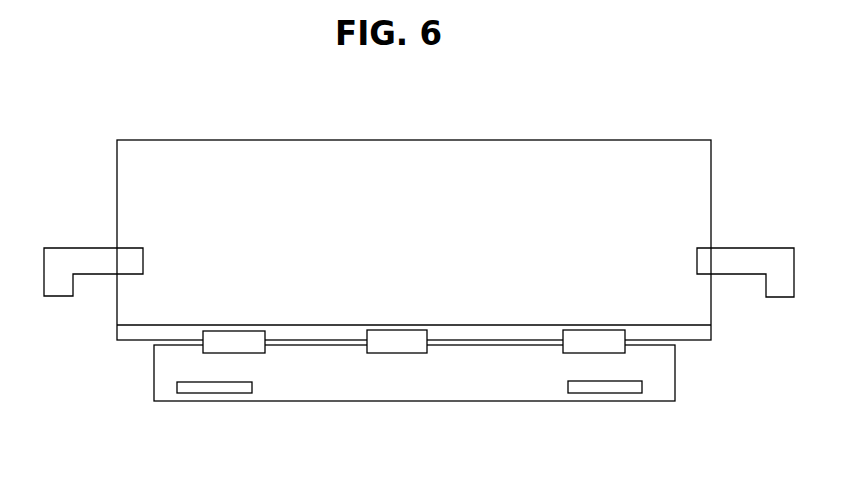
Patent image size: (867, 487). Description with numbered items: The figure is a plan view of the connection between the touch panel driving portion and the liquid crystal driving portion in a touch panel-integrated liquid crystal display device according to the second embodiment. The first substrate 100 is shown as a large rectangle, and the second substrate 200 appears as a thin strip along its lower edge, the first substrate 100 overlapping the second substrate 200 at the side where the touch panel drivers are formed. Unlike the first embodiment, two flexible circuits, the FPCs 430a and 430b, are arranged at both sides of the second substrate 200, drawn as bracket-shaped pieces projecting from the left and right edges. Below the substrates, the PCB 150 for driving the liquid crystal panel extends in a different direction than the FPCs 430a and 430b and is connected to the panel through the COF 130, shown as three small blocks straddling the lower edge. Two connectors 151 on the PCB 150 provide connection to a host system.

The first substrate 100 is at (699, 340).
The second substrate 200 is at (693, 324).
The COF 130 is at (597, 337).
The PCB 150 is at (387, 388).
The connector 151 is at (215, 388).
The FPC 430a is at (70, 256).
The FPC 430b is at (757, 256).